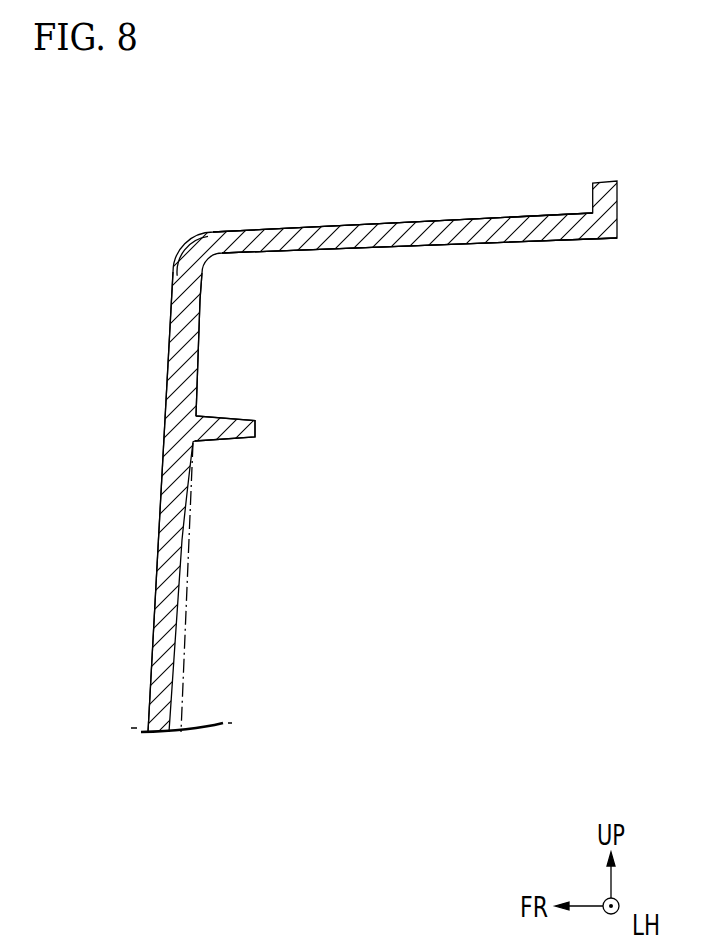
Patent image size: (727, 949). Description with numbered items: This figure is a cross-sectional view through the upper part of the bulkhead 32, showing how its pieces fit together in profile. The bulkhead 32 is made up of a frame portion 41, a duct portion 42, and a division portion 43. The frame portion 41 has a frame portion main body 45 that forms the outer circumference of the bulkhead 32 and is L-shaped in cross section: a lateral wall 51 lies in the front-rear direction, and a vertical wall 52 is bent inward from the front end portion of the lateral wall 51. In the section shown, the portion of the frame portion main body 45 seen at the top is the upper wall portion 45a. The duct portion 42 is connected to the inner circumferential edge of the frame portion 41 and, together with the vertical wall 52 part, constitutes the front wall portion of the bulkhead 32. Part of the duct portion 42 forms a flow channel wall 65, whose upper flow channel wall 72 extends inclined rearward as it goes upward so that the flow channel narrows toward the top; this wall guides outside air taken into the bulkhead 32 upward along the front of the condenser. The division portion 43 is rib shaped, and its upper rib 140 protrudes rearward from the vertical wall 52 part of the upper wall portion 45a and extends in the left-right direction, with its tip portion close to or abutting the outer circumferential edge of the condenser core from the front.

The bulkhead 32 is at (155, 238).
The frame portion 41 is at (372, 224).
The upper wall portion 45a is at (417, 224).
The frame portion main body 45 is at (403, 197).
The lateral wall 51 is at (478, 239).
The vertical wall 52 is at (195, 315).
The division portion 43 is at (257, 428).
The upper rib 140 is at (317, 446).
The duct portion 42 is at (153, 663).
The upper flow channel wall 72 is at (173, 691).
The flow channel wall 65 is at (249, 587).